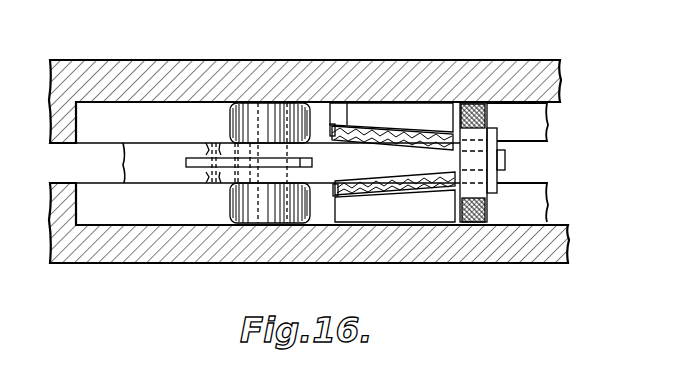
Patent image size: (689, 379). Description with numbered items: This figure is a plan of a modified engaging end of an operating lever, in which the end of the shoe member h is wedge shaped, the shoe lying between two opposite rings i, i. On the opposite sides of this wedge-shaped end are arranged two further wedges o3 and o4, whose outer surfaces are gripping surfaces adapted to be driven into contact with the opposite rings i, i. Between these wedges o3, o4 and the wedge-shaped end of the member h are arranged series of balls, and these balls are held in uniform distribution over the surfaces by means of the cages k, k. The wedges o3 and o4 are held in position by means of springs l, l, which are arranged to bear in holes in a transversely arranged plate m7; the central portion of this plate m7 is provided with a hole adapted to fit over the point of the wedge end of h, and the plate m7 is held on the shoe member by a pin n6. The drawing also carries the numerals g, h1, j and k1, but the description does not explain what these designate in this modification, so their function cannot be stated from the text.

The slide bar g is at (135, 154).
The shoe member h is at (318, 148).
The lower roller h1 is at (267, 215).
The serrated wedge strip j is at (348, 143).
The cage k is at (365, 143).
The lower serrated wedge strip k1 is at (334, 188).
The wedge o3 is at (406, 107).
The wedge o4 is at (422, 210).
The transversely arranged plate m7 is at (478, 101).
The pin n6 is at (492, 195).
The spring l is at (477, 223).
The ring i is at (548, 80).